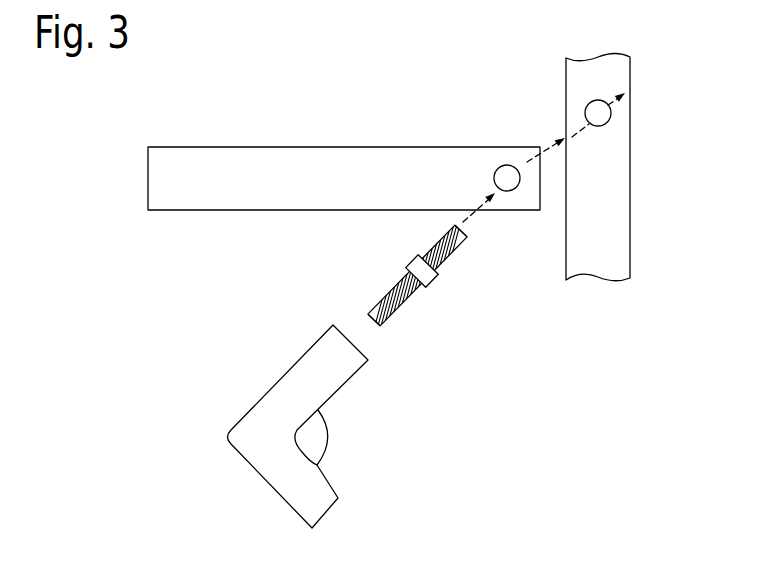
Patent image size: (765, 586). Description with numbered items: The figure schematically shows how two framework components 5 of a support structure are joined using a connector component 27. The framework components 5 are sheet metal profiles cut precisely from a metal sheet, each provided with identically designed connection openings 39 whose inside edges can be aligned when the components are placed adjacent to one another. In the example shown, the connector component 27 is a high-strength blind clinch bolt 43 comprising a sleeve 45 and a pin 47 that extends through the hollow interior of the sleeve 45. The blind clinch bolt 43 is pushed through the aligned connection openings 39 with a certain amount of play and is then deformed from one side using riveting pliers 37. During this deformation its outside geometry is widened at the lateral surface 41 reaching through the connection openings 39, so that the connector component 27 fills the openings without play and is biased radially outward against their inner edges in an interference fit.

The framework component 5 is at (234, 165).
The connection opening 39 is at (503, 165).
The lateral surface 41 is at (443, 239).
The blind clinch bolt 43 is at (390, 261).
The sleeve 45 is at (458, 255).
The pin 47 is at (403, 303).
The connector component 27 is at (460, 318).
The riveting pliers 37 is at (340, 388).